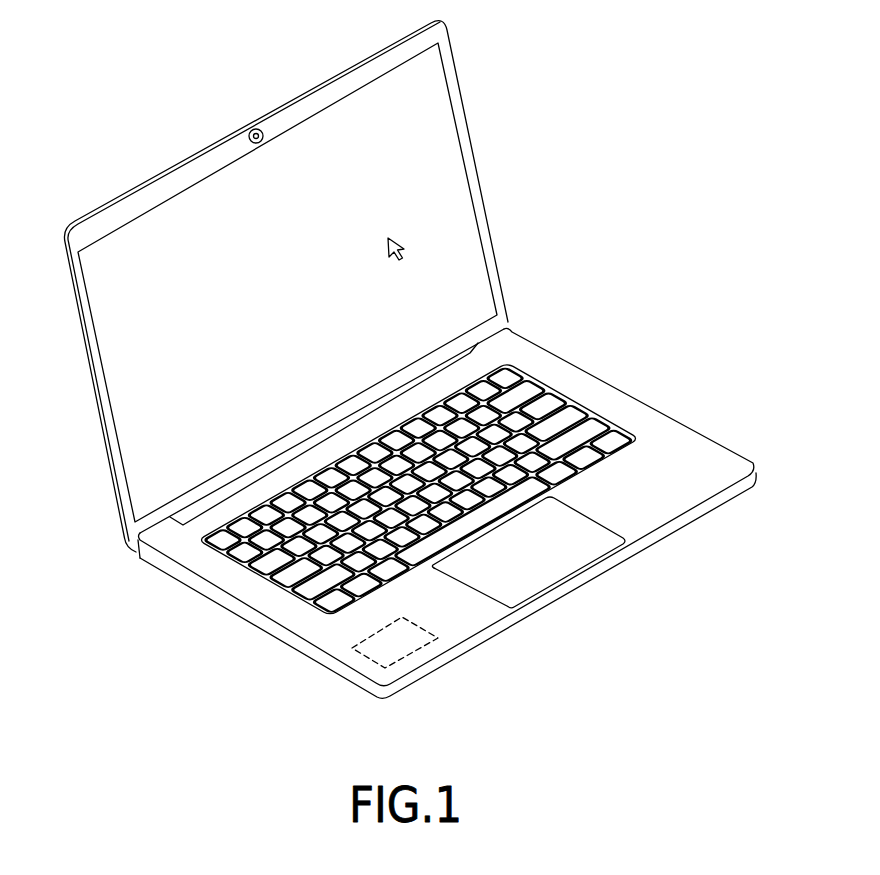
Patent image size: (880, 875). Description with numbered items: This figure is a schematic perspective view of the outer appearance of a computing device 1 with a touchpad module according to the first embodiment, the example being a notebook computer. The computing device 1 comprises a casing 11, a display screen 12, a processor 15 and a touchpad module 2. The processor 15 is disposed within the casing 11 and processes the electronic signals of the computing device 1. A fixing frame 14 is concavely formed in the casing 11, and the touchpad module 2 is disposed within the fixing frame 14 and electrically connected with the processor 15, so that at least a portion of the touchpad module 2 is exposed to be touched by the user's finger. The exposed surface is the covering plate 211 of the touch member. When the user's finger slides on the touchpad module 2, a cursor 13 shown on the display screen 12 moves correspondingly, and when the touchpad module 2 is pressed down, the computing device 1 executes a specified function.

The computing device 1 is at (637, 140).
The casing 11 is at (663, 430).
The display screen 12 is at (438, 108).
The cursor 13 is at (395, 235).
The fixing frame 14 is at (470, 588).
The processor 15 is at (382, 652).
The touchpad module 2 is at (529, 576).
The covering plate 211 is at (527, 575).